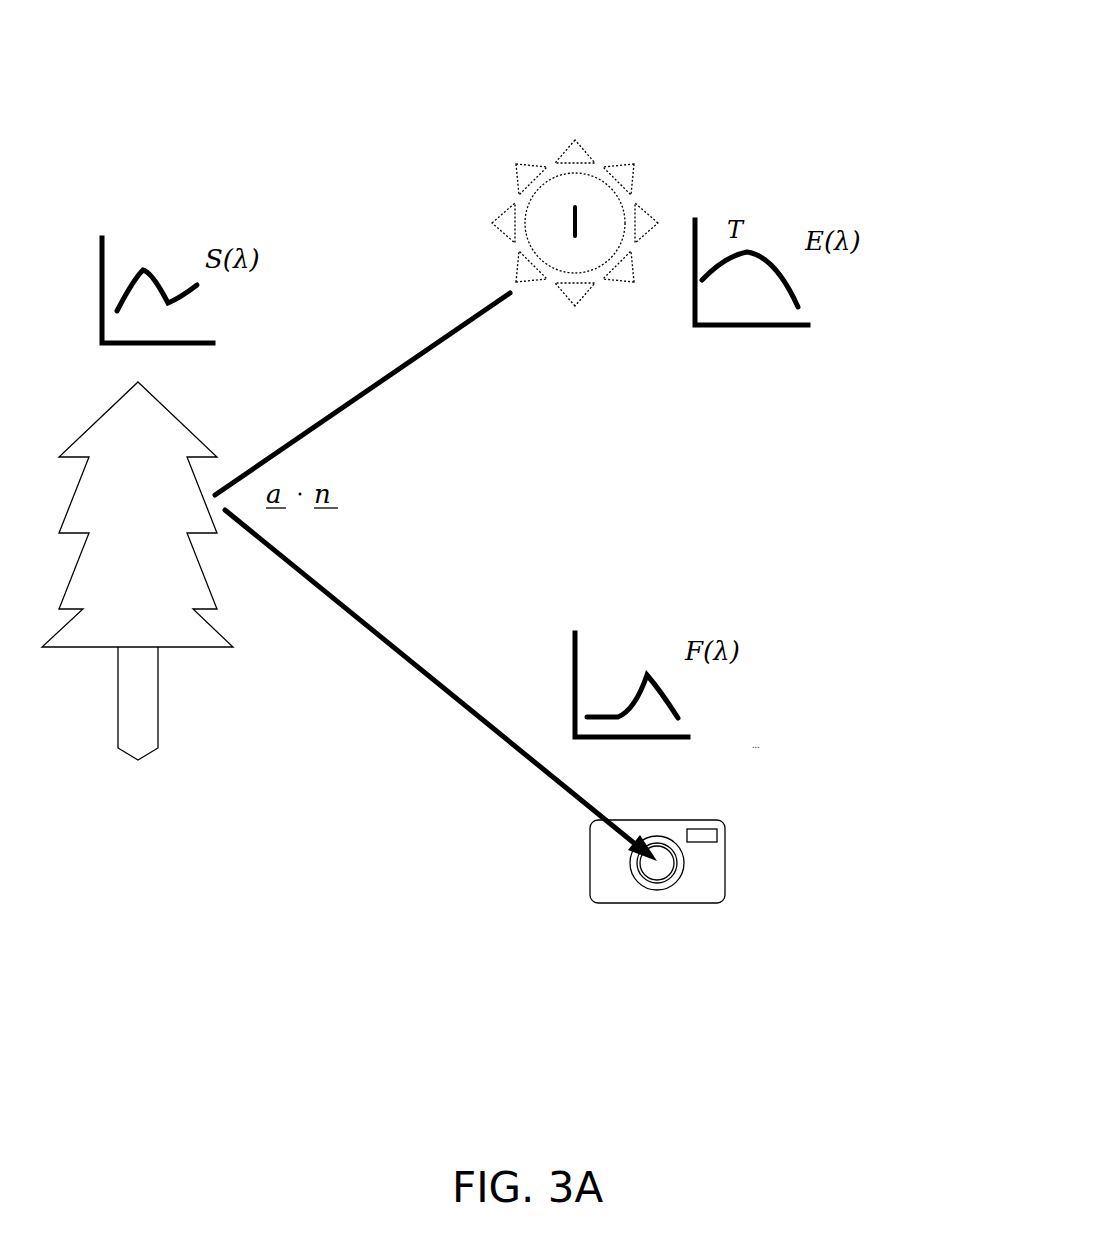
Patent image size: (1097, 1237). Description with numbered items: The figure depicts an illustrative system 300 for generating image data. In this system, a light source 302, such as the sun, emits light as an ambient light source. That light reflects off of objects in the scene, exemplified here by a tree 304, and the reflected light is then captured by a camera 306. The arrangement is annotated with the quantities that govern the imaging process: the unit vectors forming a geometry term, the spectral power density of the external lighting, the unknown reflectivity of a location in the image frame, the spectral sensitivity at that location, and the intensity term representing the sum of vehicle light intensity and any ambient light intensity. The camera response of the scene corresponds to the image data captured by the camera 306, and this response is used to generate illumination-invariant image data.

The system 300 is at (896, 17).
The light source 302 is at (651, 142).
The tree 304 is at (183, 393).
The camera 306 is at (738, 799).